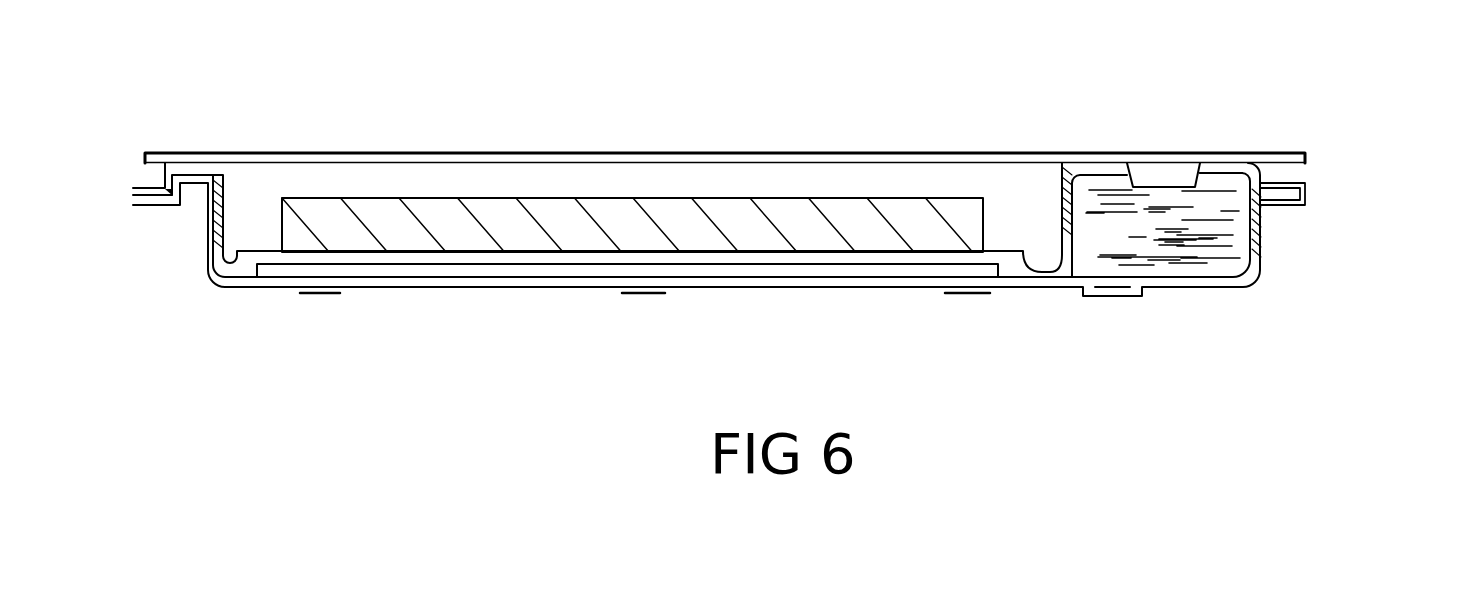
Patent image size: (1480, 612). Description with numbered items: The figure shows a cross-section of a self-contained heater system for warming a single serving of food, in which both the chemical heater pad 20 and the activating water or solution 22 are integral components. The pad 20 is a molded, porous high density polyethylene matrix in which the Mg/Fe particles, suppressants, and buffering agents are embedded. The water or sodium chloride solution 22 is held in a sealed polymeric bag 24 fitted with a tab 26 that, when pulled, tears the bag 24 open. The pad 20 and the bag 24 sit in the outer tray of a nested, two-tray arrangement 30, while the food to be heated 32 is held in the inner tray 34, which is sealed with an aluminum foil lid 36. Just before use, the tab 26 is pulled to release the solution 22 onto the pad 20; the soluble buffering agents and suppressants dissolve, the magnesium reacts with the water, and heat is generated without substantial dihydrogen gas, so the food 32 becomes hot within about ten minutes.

The chemical heater pad 20 is at (702, 279).
The activating water or solution 22 is at (1219, 270).
The sealed polymeric bag 24 is at (1237, 242).
The tab 26 is at (1163, 174).
The nested two-tray arrangement 30 is at (1387, 153).
The food to be heated 32 is at (769, 214).
The inner tray 34 is at (233, 216).
The aluminum foil lid 36 is at (493, 149).